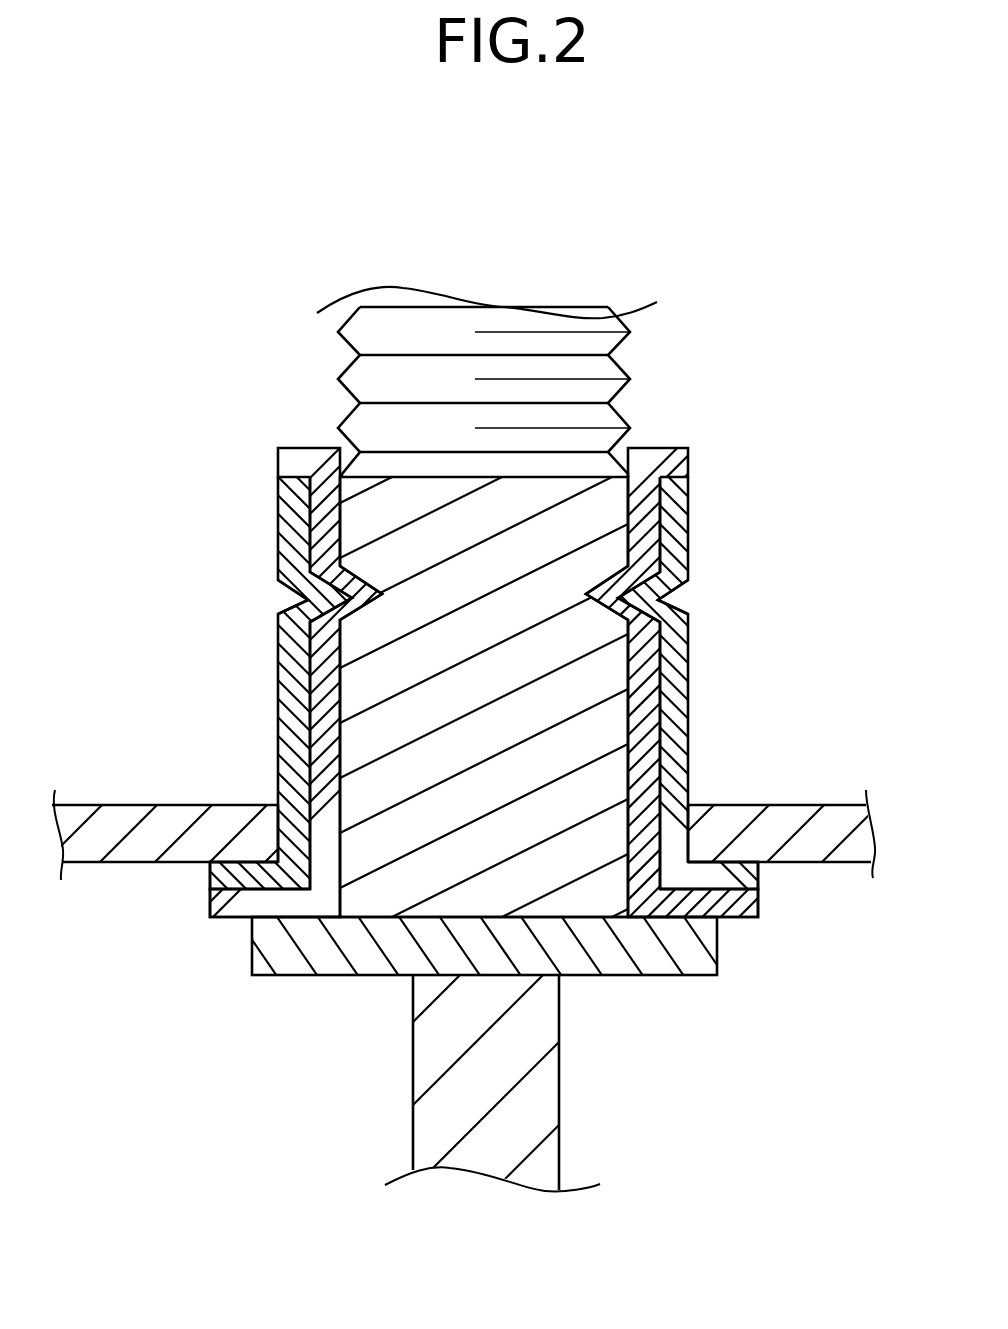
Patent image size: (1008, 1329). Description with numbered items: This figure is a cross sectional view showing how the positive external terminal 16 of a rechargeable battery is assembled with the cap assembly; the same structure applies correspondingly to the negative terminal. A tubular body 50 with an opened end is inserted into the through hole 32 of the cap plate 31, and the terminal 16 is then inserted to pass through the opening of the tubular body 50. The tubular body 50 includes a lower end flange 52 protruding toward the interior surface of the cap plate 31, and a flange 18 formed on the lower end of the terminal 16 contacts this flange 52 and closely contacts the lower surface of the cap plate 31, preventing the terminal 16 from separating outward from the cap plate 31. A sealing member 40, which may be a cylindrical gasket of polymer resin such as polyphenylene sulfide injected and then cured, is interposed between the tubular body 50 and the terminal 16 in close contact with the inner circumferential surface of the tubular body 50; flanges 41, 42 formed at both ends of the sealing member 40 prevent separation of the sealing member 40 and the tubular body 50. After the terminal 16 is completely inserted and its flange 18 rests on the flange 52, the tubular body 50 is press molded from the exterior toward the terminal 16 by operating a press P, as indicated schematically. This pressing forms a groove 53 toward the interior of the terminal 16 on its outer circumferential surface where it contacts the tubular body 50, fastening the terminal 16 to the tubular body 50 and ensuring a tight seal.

The positive external terminal 16 is at (450, 332).
The flange 18 is at (651, 953).
The cap plate 31 is at (130, 822).
The through hole 32 is at (280, 804).
The sealing member 40 is at (645, 719).
The flange 41 is at (672, 448).
The flange 42 is at (220, 903).
The tubular body 50 is at (688, 522).
The flange 52 is at (217, 875).
The groove 53 is at (688, 605).
The press P is at (238, 597).